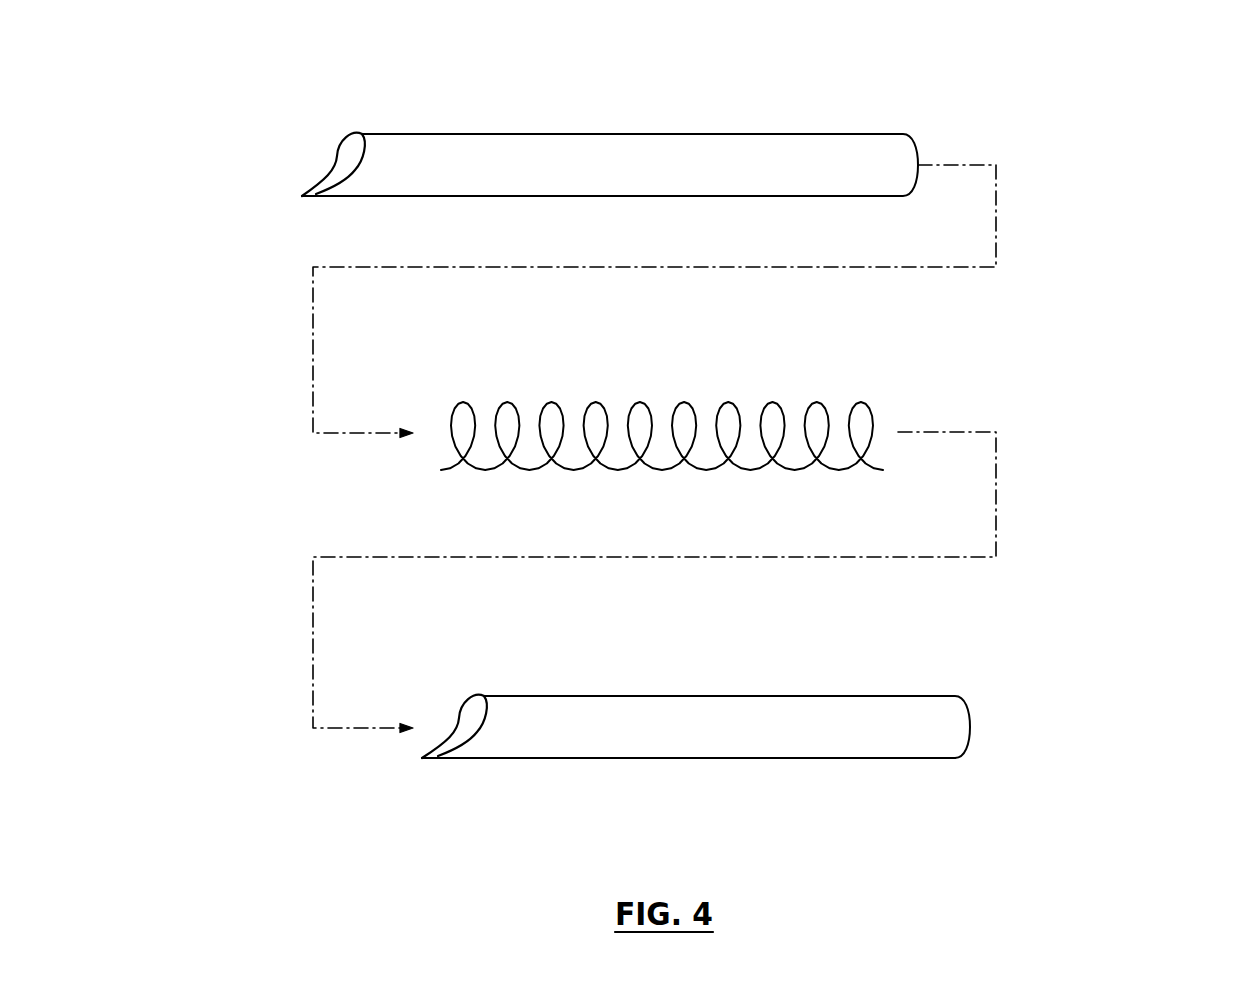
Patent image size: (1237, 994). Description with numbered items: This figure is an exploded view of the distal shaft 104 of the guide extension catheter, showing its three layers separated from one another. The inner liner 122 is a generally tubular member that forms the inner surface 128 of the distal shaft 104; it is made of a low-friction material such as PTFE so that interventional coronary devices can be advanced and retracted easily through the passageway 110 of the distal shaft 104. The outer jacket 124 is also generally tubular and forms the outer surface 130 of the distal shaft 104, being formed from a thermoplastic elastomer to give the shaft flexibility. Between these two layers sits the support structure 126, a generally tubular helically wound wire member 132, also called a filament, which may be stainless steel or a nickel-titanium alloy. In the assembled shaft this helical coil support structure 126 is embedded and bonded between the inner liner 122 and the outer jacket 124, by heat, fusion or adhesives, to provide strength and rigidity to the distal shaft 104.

The distal shaft 104 is at (1127, 148).
The passageway 110 is at (550, 111).
The inner liner 122 is at (528, 133).
The outer jacket 124 is at (696, 723).
The support structure 126 is at (662, 381).
The inner surface 128 is at (348, 157).
The outer surface 130 is at (534, 747).
The helically wound wire member 132 is at (783, 418).